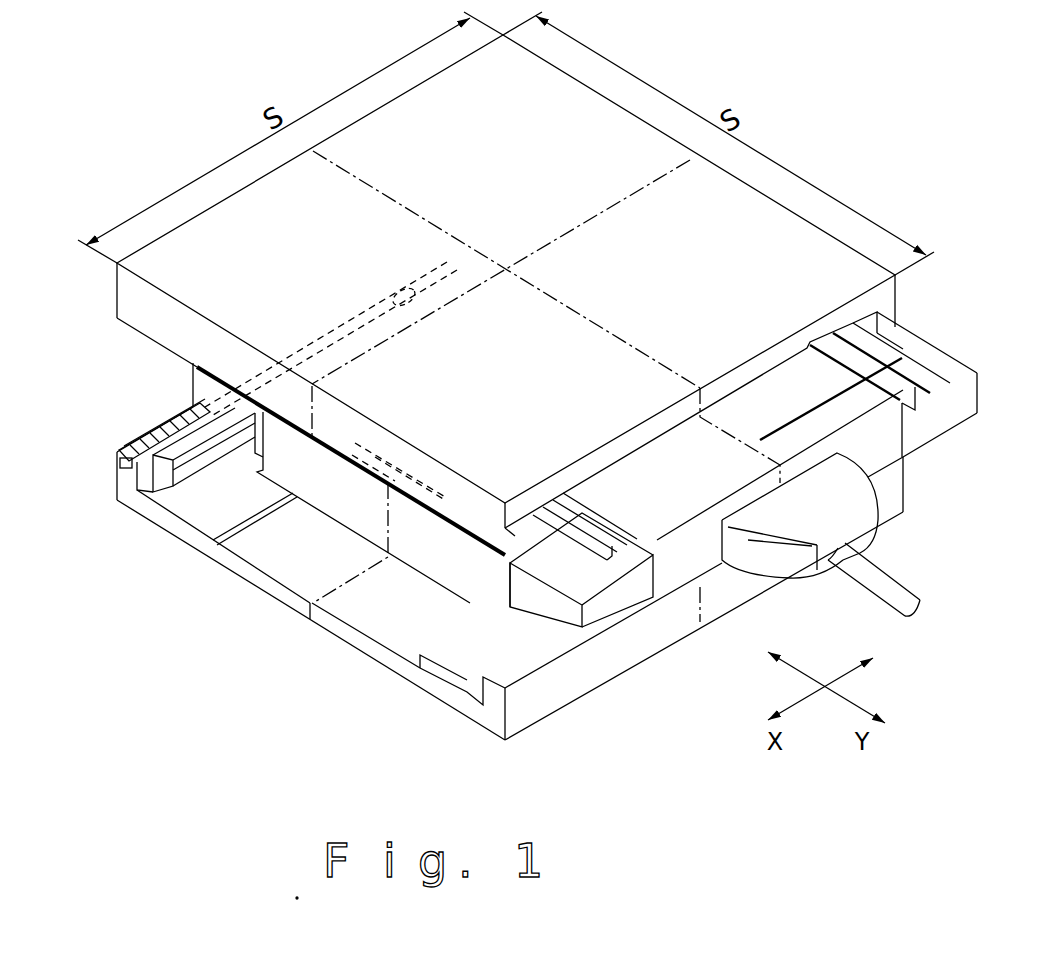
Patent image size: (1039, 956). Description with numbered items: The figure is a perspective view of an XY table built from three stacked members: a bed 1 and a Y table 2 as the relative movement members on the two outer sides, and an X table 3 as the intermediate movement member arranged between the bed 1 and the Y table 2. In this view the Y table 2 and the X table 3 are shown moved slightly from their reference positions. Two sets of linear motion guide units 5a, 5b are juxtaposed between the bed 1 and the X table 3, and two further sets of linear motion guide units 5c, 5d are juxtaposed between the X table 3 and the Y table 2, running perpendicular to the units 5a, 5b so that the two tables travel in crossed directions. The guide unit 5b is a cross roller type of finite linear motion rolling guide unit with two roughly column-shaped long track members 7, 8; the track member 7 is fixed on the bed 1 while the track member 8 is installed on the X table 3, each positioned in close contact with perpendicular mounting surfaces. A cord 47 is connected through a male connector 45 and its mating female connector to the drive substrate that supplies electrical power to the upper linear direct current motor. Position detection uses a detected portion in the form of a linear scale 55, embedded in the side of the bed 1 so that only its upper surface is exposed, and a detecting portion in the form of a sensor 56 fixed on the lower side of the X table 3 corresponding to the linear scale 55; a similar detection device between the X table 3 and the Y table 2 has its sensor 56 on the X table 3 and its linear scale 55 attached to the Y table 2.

The bed 1 is at (223, 573).
The Y table 2 is at (393, 97).
The X table 3 is at (985, 380).
The linear motion guide unit 5a is at (212, 482).
The linear motion guide unit 5b is at (463, 657).
The linear motion guide unit 5c is at (577, 560).
The linear motion guide unit 5d is at (923, 353).
The track member 7 is at (188, 442).
The track member 8 is at (887, 356).
The male connector 45 is at (880, 497).
The cord 47 is at (900, 570).
The linear scale 55 is at (148, 448).
The sensor 56 is at (401, 297).